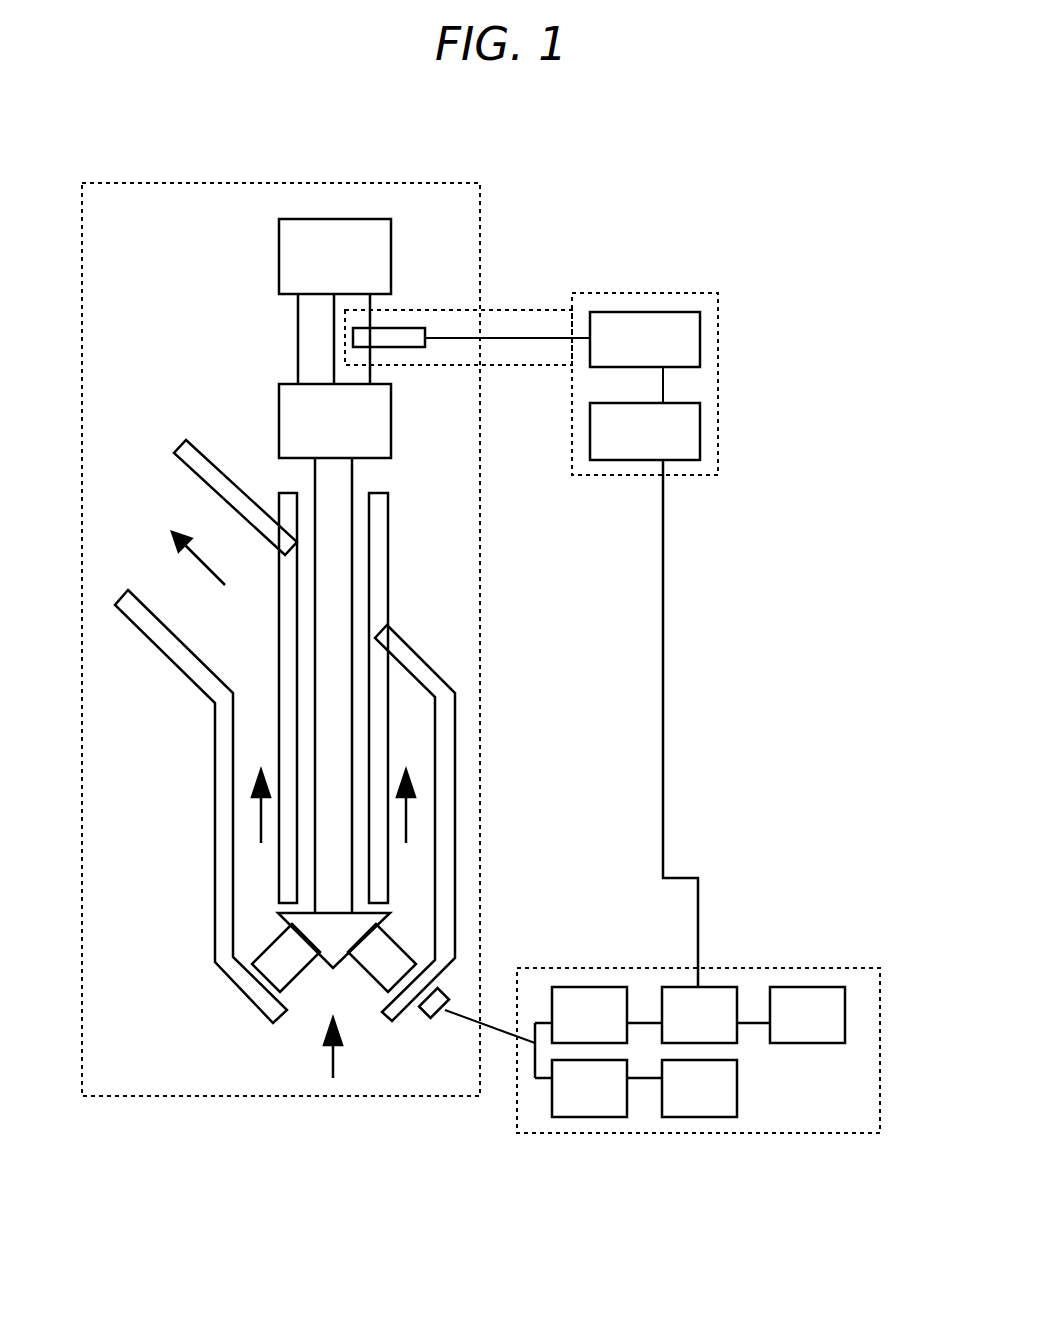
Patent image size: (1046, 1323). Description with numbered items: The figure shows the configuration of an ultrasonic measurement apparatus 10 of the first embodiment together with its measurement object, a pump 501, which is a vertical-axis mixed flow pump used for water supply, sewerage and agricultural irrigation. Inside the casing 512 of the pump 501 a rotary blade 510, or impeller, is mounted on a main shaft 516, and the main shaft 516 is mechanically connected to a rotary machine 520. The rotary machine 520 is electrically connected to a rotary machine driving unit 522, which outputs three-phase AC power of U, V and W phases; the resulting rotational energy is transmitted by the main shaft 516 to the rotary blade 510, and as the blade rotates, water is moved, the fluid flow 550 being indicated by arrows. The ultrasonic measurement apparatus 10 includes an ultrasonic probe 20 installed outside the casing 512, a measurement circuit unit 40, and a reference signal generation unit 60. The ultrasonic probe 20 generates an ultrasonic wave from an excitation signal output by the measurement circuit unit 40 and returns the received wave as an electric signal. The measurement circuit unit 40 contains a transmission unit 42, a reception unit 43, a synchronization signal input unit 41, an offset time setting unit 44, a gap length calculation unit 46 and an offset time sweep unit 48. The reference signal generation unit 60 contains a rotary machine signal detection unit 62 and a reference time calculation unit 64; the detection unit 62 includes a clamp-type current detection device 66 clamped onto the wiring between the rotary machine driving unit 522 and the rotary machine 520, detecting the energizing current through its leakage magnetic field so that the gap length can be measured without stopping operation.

The ultrasonic measurement apparatus 10 is at (798, 212).
The pump 501 is at (188, 183).
The rotary machine driving unit 522 is at (327, 219).
The rotary machine 520 is at (280, 418).
The current detection device 66 is at (400, 328).
The main shaft 516 is at (337, 683).
The rotary blade 510 is at (383, 957).
The casing 512 is at (400, 1005).
The fluid flow 550 is at (203, 566).
The ultrasonic probe 20 is at (442, 1023).
The reference signal generation unit 60 is at (627, 293).
The rotary machine signal detection unit 62 is at (700, 332).
The reference time calculation unit 64 is at (700, 427).
The synchronization signal input unit 41 is at (697, 968).
The measurement circuit unit 40 is at (833, 968).
The transmission unit 42 is at (572, 987).
The offset time setting unit 44 is at (718, 987).
The offset time sweep unit 48 is at (788, 987).
The reception unit 43 is at (590, 1117).
The gap length calculation unit 46 is at (690, 1117).